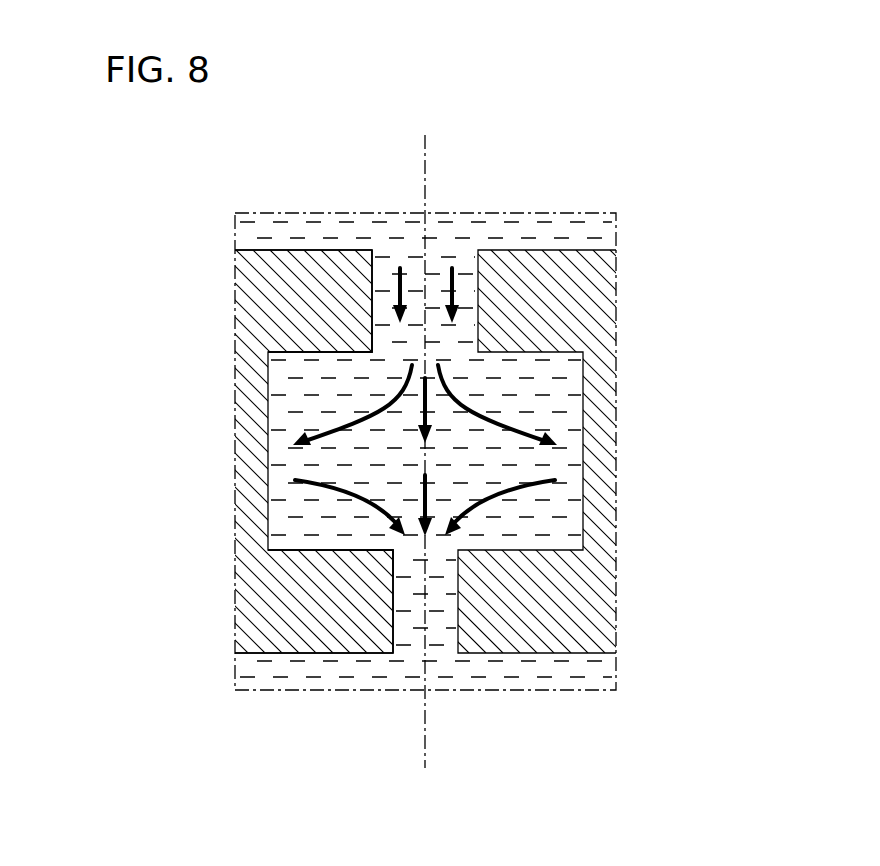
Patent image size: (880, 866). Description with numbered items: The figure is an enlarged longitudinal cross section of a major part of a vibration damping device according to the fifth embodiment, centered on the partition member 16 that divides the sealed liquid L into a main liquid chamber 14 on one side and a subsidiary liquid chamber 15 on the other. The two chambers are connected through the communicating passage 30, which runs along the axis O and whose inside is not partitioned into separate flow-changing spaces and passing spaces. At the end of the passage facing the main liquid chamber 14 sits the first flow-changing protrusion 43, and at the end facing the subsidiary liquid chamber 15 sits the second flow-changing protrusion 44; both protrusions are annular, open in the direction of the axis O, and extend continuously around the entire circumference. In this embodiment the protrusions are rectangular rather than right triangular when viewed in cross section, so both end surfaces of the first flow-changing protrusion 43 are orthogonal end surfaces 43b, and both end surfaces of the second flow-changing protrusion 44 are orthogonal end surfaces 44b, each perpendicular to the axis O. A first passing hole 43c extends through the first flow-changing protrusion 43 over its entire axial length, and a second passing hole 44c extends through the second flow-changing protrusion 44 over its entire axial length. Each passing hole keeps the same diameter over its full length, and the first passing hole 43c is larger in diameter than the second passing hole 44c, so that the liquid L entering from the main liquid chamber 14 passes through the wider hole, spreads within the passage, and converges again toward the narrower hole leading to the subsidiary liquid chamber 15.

The main liquid chamber 14 is at (603, 232).
The subsidiary liquid chamber 15 is at (605, 670).
The partition member 16 is at (619, 440).
The communicating passage 30 is at (462, 260).
The first flow-changing protrusion 43 is at (338, 300).
The orthogonal end surface 43b is at (352, 252).
The first passing hole 43c is at (372, 333).
The second flow-changing protrusion 44 is at (345, 607).
The orthogonal end surface 44b is at (348, 550).
The second passing hole 44c is at (393, 577).
The liquid L is at (443, 227).
The axis O is at (425, 158).